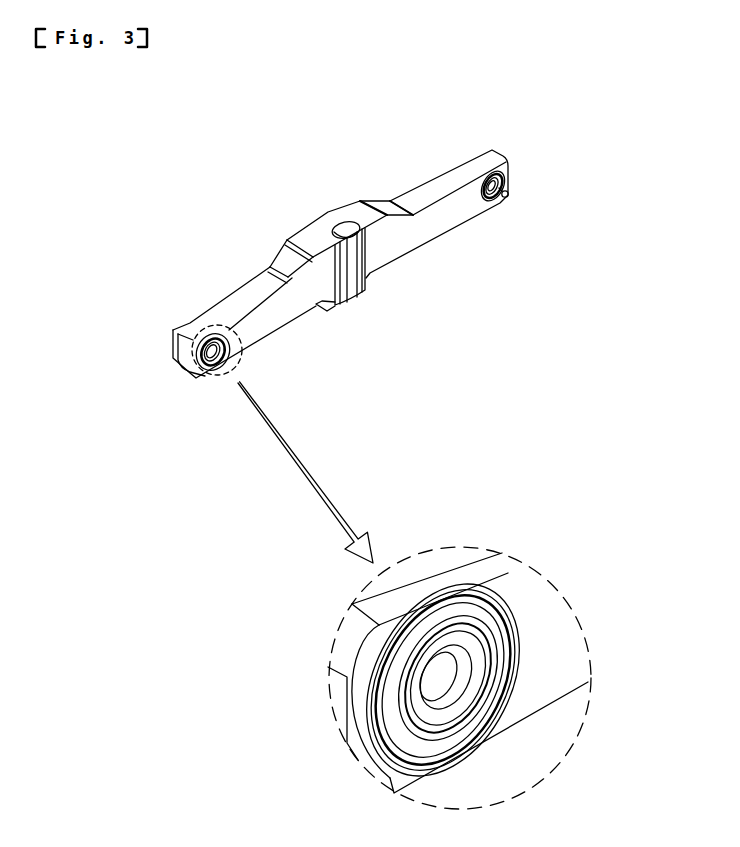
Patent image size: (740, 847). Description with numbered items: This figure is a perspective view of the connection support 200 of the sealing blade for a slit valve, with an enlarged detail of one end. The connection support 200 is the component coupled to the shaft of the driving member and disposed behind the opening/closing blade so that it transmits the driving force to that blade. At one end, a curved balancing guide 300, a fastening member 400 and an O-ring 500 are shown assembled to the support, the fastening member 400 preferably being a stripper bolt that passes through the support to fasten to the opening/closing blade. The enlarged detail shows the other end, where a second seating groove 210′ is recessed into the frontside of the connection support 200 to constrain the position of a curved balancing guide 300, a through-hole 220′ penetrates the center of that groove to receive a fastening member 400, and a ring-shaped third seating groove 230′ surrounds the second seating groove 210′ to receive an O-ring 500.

The connection support 200 is at (318, 235).
The curved balancing guide 300 is at (512, 178).
The fastening member 400 is at (510, 192).
The O-ring 500 is at (513, 162).
The second seating groove 210′ is at (480, 665).
The through-hole 220′ is at (440, 677).
The third seating groove 230′ is at (398, 748).